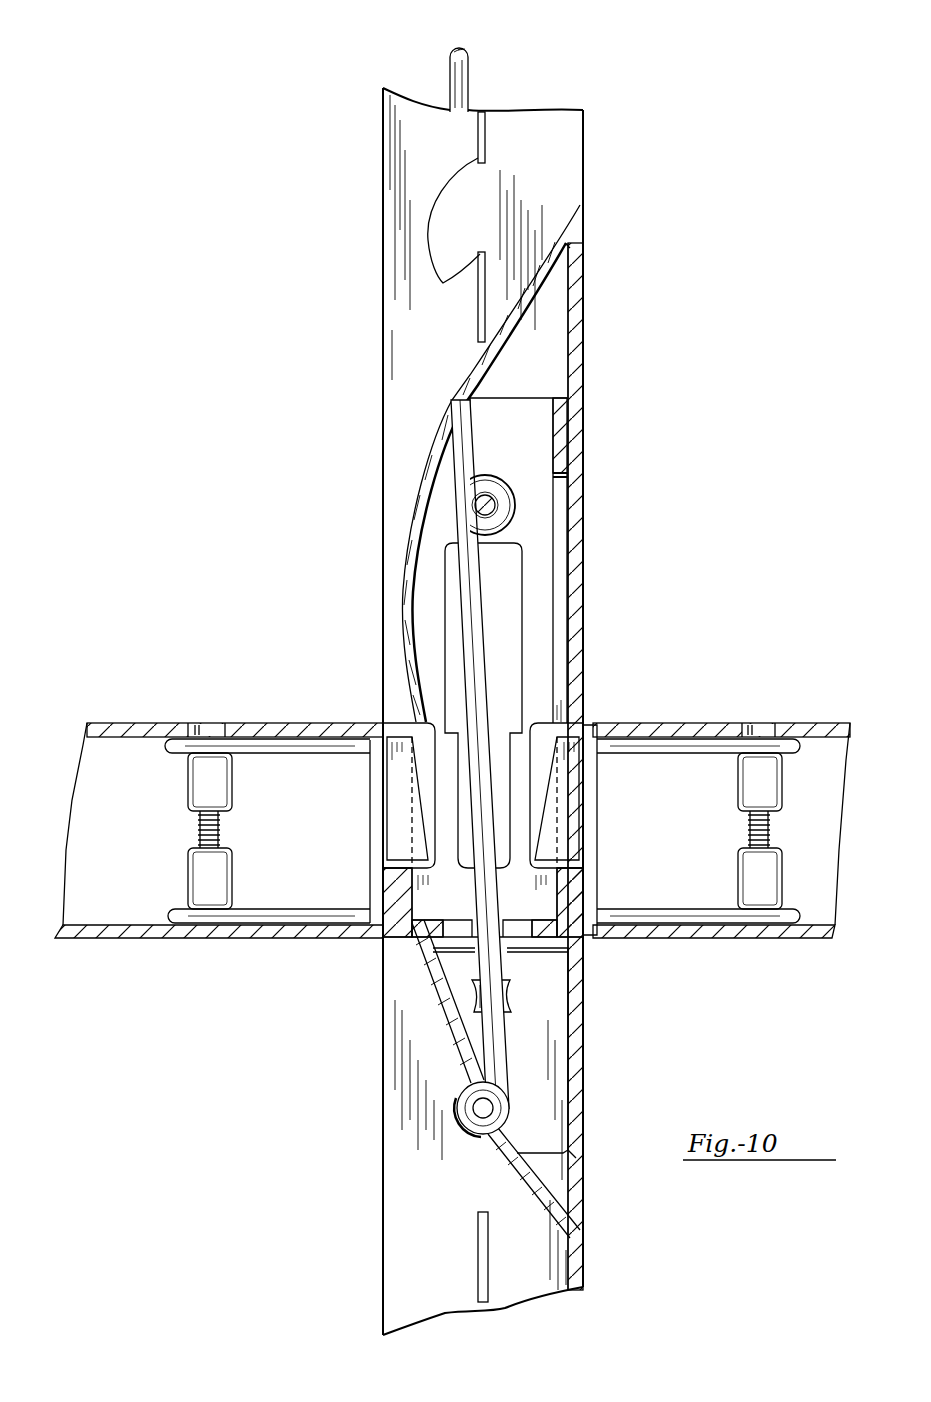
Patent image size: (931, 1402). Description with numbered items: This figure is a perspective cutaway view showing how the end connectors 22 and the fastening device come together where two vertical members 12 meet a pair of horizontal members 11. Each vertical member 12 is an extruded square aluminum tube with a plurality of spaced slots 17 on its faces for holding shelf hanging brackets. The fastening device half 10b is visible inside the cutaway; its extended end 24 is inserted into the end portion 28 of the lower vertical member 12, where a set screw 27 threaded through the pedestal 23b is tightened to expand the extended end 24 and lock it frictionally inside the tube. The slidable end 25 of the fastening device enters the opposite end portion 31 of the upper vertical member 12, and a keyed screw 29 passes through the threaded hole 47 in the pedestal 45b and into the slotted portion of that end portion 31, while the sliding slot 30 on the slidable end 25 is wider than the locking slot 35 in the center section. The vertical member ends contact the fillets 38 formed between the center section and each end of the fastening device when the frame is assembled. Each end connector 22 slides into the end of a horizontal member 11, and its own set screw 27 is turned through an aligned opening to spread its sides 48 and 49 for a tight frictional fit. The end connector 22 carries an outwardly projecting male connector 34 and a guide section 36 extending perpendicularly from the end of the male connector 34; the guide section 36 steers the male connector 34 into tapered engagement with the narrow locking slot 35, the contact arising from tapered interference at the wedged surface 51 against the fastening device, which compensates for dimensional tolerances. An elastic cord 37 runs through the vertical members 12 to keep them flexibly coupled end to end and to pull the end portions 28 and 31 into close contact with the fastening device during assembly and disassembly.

The fastening device half 10b is at (521, 399).
The horizontal member 11 is at (195, 940).
The vertical member 12 is at (380, 362).
The slot 17 is at (454, 227).
The end connector 22 is at (177, 756).
The pedestal 23b is at (490, 1082).
The extended end 24 is at (547, 1120).
The slidable end 25 is at (538, 643).
The set screw 27 is at (217, 832).
The end portion 28 is at (395, 1065).
The keyed screw 29 is at (485, 495).
The sliding slot 30 is at (516, 606).
The end portion 31 is at (380, 473).
The male connector 34 is at (388, 800).
The locking slot 35 is at (497, 770).
The guide section 36 is at (398, 745).
The elastic cord 37 is at (468, 72).
The fillet 38 is at (130, 922).
The pedestal 45b is at (517, 520).
The threaded hole 47 is at (493, 503).
The side 48 is at (274, 755).
The side 49 is at (327, 905).
The wedged surface 51 is at (388, 848).